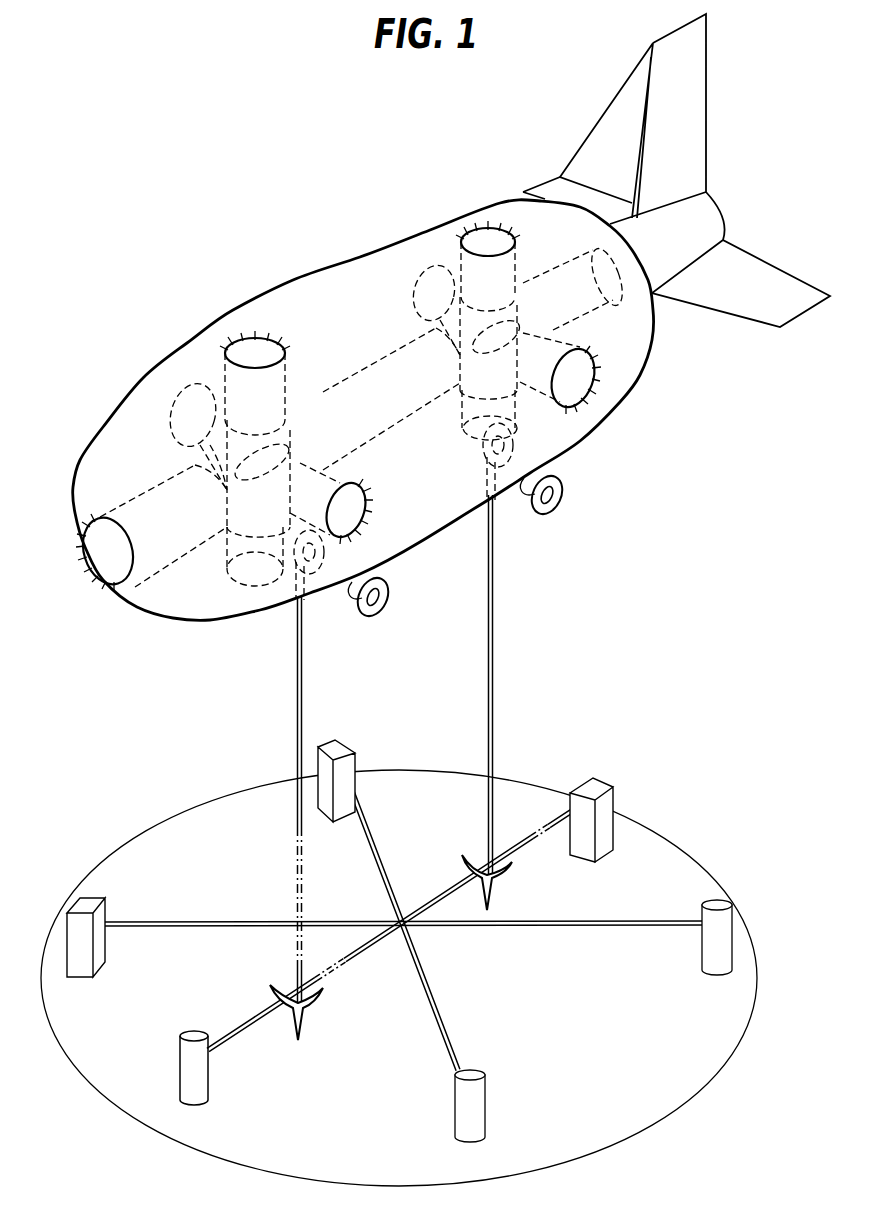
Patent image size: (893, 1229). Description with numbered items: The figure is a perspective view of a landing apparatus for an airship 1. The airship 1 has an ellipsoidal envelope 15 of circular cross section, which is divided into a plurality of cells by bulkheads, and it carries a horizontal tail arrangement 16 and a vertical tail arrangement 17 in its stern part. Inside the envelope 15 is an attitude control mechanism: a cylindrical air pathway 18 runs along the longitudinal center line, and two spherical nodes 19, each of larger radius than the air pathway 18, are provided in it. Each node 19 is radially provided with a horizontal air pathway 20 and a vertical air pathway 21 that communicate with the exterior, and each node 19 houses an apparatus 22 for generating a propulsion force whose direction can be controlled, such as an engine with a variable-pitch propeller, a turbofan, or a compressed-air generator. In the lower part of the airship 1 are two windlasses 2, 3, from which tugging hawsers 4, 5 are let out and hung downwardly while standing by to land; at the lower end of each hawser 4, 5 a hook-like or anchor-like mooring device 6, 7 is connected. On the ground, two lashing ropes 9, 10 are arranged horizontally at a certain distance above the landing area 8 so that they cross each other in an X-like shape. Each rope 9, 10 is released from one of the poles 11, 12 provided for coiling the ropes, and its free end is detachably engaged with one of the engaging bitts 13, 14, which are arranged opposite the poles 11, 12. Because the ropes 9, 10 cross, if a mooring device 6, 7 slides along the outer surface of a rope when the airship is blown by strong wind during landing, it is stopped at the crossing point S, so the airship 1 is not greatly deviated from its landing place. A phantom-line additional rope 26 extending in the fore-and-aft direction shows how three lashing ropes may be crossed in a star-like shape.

The airship 1 is at (363, 389).
The windlass 2 is at (302, 590).
The windlass 3 is at (500, 500).
The tugging hawser 4 is at (296, 724).
The tugging hawser 5 is at (488, 667).
The mooring device 6 is at (275, 990).
The mooring device 7 is at (462, 857).
The landing area 8 is at (633, 1087).
The lashing rope 9 is at (612, 922).
The lashing rope 10 is at (440, 1045).
The pole 11 is at (90, 900).
The pole 12 is at (340, 748).
The engaging bitt 13 is at (708, 900).
The engaging bitt 14 is at (456, 1105).
The envelope 15 is at (200, 360).
The horizontal tail arrangement 16 is at (738, 268).
The vertical tail arrangement 17 is at (688, 147).
The air pathway 18 is at (110, 552).
The node 19 is at (430, 327).
The horizontal air pathway 20 is at (583, 380).
The vertical air pathway 21 is at (490, 244).
The propulsion force generating apparatus 22 is at (417, 267).
The additional rope 26 is at (255, 1015).
The crossing point S is at (400, 955).